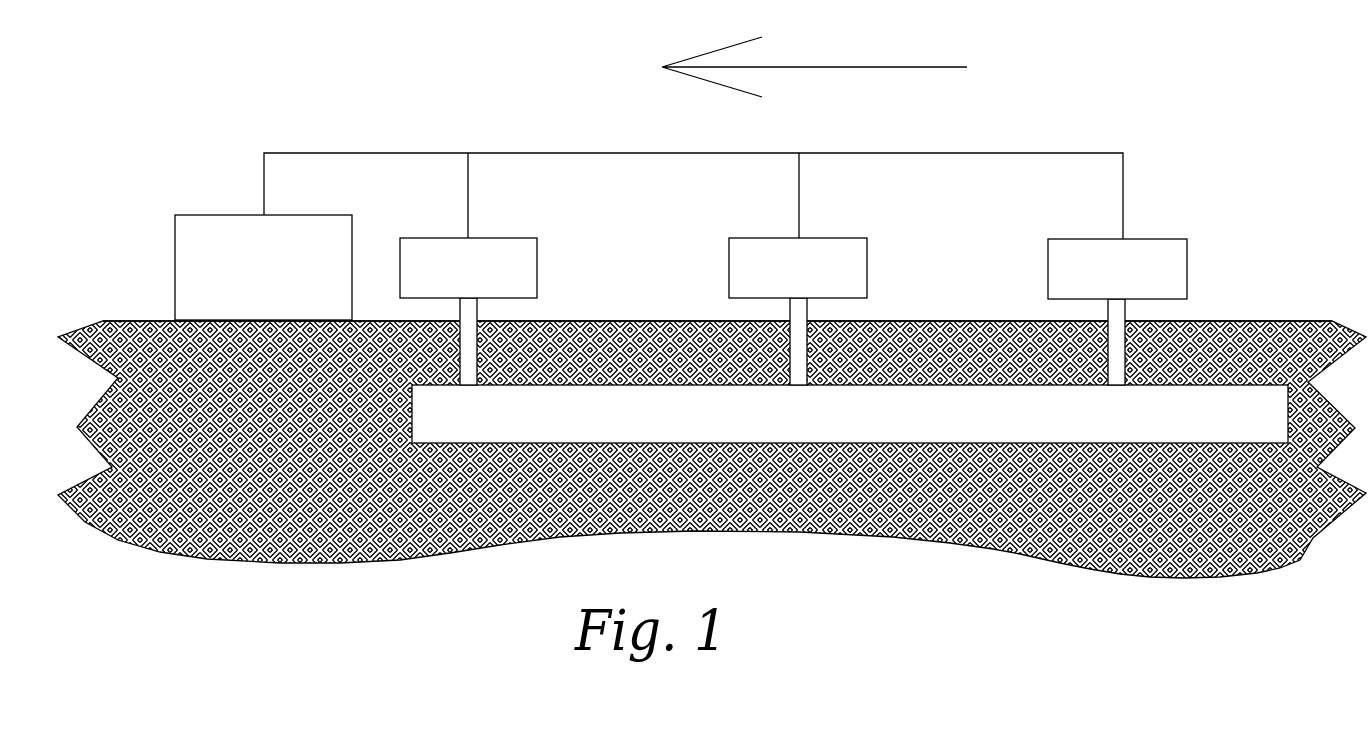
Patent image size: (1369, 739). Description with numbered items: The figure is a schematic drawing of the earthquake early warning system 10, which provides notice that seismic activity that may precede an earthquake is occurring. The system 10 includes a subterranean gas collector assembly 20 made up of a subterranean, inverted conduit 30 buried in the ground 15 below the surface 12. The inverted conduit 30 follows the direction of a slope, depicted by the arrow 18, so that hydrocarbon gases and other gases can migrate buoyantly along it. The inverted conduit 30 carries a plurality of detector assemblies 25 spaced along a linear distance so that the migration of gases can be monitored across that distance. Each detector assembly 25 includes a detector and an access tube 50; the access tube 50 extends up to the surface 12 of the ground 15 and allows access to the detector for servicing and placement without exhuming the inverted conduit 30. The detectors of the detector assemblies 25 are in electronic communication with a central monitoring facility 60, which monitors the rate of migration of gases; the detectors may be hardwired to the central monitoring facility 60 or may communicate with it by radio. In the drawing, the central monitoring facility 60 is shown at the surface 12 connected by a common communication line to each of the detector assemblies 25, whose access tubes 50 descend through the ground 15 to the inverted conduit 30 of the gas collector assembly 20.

The earthquake early warning system 10 is at (1092, 122).
The surface 12 is at (1280, 320).
The ground 15 is at (1197, 543).
The arrow 18 is at (820, 65).
The subterranean gas collector assembly 20 is at (975, 383).
The detector assembly 25 is at (460, 346).
The inverted conduit 30 is at (1098, 425).
The access tube 50 is at (790, 313).
The central monitoring facility 60 is at (213, 213).